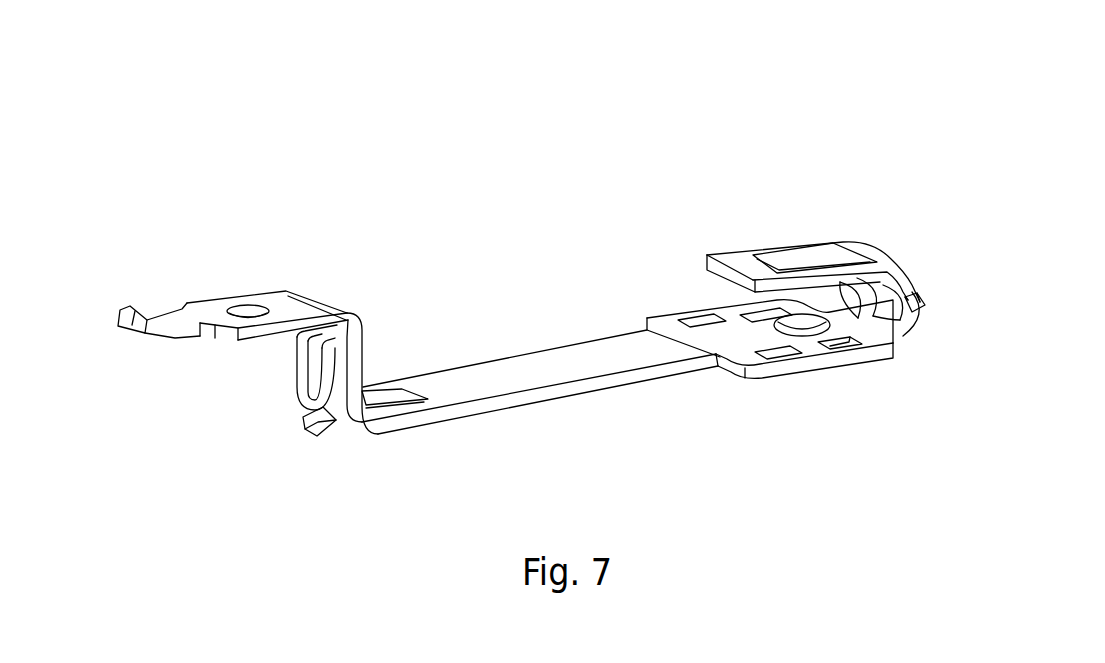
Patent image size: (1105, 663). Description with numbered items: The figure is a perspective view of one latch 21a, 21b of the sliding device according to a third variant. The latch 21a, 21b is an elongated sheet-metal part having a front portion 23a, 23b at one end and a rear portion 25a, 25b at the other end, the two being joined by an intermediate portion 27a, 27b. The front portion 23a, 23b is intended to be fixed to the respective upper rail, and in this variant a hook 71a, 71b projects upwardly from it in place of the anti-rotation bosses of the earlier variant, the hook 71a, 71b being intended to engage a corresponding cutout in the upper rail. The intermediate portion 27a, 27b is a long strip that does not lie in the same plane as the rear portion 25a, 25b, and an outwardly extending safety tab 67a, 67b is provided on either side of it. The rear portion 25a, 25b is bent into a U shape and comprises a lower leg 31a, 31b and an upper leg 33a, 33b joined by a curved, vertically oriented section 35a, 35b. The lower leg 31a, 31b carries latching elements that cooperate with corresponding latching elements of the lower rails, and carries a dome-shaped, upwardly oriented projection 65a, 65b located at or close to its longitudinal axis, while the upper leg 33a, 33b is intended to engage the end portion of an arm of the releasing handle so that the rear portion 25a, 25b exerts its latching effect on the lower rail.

The latch 21a is at (569, 260).
The latch 21b is at (790, 151).
The front portion 23a is at (261, 318).
The front portion 23b is at (277, 296).
The rear portion 25a is at (858, 250).
The rear portion 25b is at (833, 240).
The intermediate portion 27a is at (540, 353).
The intermediate portion 27b is at (507, 377).
The lower leg 31a is at (826, 399).
The lower leg 31b is at (717, 362).
The upper leg 33a is at (773, 229).
The upper leg 33b is at (738, 260).
The curved vertically oriented section 35a is at (997, 286).
The curved vertically oriented section 35b is at (907, 268).
The dome-shaped projection 65a is at (911, 382).
The dome-shaped projection 65b is at (847, 348).
The safety tab 67a is at (964, 311).
The safety tab 67b is at (905, 310).
The hook 71a is at (106, 275).
The hook 71b is at (129, 308).